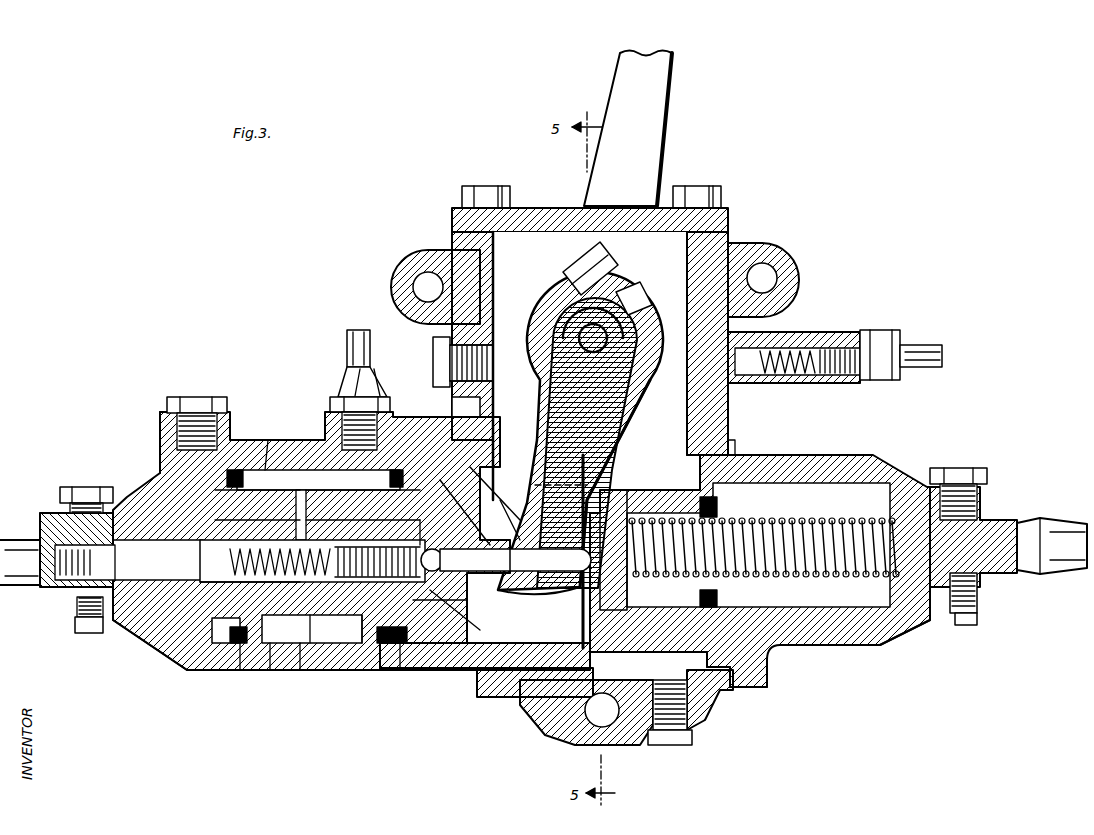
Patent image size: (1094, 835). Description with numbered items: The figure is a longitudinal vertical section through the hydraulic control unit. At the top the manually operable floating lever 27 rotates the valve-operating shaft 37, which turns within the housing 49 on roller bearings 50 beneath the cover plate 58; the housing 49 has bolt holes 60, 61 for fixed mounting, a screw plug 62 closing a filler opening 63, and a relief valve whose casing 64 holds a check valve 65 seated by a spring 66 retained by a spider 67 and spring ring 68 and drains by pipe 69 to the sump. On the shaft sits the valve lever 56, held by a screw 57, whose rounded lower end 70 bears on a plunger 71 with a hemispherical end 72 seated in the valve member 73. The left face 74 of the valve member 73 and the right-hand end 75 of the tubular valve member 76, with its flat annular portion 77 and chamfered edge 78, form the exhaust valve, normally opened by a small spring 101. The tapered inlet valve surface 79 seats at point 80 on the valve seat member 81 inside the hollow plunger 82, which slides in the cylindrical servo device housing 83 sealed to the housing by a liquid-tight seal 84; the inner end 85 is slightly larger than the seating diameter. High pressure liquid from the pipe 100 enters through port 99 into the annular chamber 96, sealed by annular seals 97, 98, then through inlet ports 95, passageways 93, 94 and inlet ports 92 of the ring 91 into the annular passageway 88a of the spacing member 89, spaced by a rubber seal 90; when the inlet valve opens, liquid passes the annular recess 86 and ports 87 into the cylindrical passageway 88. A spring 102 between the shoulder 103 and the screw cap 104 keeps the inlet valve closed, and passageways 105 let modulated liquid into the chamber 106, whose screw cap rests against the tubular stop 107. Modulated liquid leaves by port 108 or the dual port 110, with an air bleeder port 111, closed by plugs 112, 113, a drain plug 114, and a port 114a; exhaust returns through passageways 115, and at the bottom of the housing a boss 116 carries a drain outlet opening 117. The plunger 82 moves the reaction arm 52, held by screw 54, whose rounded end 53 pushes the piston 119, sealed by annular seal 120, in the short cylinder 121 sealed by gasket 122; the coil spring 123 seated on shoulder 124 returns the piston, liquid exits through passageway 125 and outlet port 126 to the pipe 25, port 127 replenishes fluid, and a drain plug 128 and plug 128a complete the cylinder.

The pipe 25 is at (1068, 565).
The floating lever 27 is at (655, 96).
The valve-operating shaft 37 is at (592, 345).
The housing 49 is at (455, 260).
The roller bearings 50 is at (637, 240).
The reaction arm 52 is at (620, 408).
The rounded end 53 is at (583, 560).
The screw 54 is at (620, 255).
The valve lever 56 is at (585, 446).
The screw 57 is at (642, 295).
The cover plate 58 is at (730, 220).
The bolt hole 60 is at (770, 272).
The bolt hole 61 is at (425, 282).
The screw plug 62 is at (437, 360).
The filler opening 63 is at (490, 372).
The relief valve casing 64 is at (782, 333).
The check valve 65 is at (763, 382).
The spring 66 is at (826, 346).
The spider 67 is at (908, 356).
The spring ring 68 is at (845, 383).
The pipe 69 is at (878, 330).
The rounded lower end 70 is at (530, 570).
The plunger 71 is at (510, 548).
The hemispherical end 72 is at (443, 552).
The valve member 73 is at (478, 620).
The left face 74 is at (508, 515).
The right-hand end 75 is at (490, 575).
The tubular valve member 76 is at (257, 502).
The flat annular portion 77 is at (462, 512).
The chamfered edge 78 is at (440, 610).
The tapered inlet valve surface 79 is at (380, 612).
The seating point 80 is at (395, 540).
The valve seat member 81 is at (438, 545).
The hollow plunger 82 is at (455, 460).
The cylindrical servo device housing 83 is at (285, 455).
The liquid-tight seal 84 is at (482, 410).
The inner end 85 is at (212, 628).
The annular recess 86 is at (340, 643).
The ports 87 is at (385, 645).
The cylindrical passageway 88 is at (250, 600).
The annular passageway 88a is at (335, 540).
The spacing member 89 is at (302, 540).
The rubber seal 90 is at (348, 488).
The ring 91 is at (250, 540).
The inlet ports 92 is at (285, 645).
The passageway 93 is at (250, 645).
The passageway 94 is at (312, 629).
The inlet ports 95 is at (310, 645).
The annular chamber 96 is at (268, 440).
The annular seal 97 is at (236, 470).
The annular seal 98 is at (398, 470).
The port 99 is at (395, 440).
The pipe 100 is at (350, 342).
The small spring 101 is at (228, 566).
The spring 102 is at (215, 553).
The shoulder 103 is at (326, 629).
The screw cap 104 is at (175, 648).
The passageways 105 is at (200, 550).
The chamber 106 is at (160, 625).
The tubular stop 107 is at (125, 540).
The port 108 is at (32, 540).
The port 110 is at (58, 510).
The air bleeder port 111 is at (165, 422).
The plug 112 is at (65, 488).
The plug 113 is at (175, 400).
The drain plug 114 is at (82, 633).
The port 114a is at (410, 660).
The passageways 115 is at (485, 470).
The boss 116 is at (715, 700).
The drain outlet opening 117 is at (690, 720).
The piston 119 is at (630, 490).
The annular seal 120 is at (718, 598).
The short cylinder 121 is at (840, 640).
The gasket 122 is at (770, 675).
The coil spring 123 is at (855, 580).
The shoulder 124 is at (912, 625).
The passageway 125 is at (965, 535).
The outlet port 126 is at (985, 595).
The port 127 is at (720, 475).
The drain plug 128 is at (966, 626).
The plug 128a is at (965, 470).